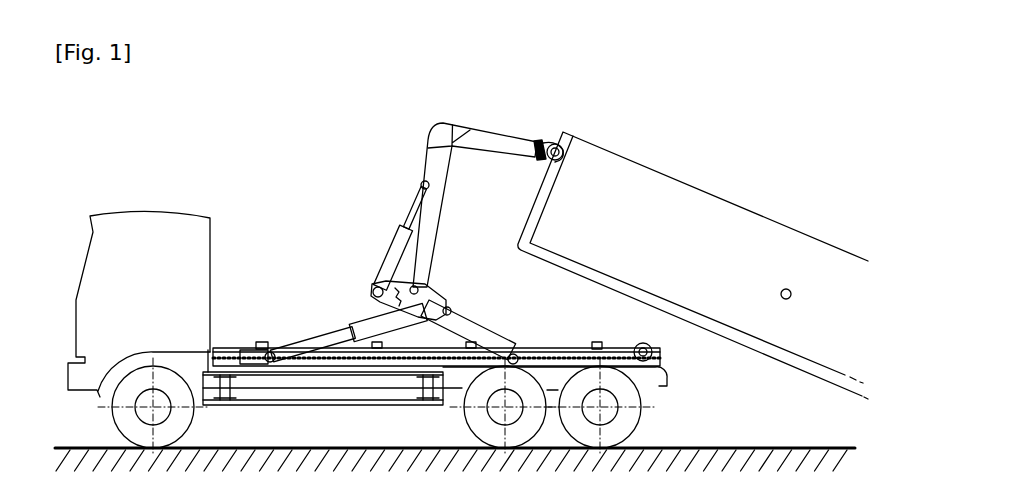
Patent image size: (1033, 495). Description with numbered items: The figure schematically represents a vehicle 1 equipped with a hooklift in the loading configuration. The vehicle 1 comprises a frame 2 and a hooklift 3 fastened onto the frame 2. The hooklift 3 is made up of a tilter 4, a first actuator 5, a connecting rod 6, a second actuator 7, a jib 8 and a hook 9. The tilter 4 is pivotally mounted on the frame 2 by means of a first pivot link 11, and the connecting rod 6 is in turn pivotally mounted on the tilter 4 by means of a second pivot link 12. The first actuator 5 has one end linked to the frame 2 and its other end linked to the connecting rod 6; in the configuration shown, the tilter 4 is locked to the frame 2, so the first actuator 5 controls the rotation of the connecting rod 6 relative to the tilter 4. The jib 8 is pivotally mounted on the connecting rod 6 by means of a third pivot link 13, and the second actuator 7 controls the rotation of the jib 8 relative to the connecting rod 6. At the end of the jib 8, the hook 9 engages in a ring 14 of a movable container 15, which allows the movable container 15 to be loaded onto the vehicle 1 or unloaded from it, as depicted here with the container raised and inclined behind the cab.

The vehicle 1 is at (183, 155).
The frame 2 is at (354, 383).
The hooklift 3 is at (368, 216).
The tilter 4 is at (561, 344).
The first actuator 5 is at (333, 331).
The connecting rod 6 is at (471, 304).
The second actuator 7 is at (383, 256).
The jib 8 is at (414, 166).
The hook 9 is at (537, 175).
The first pivot link 11 is at (640, 337).
The second pivot link 12 is at (522, 351).
The third pivot link 13 is at (429, 282).
The ring 14 is at (556, 136).
The movable container 15 is at (720, 265).